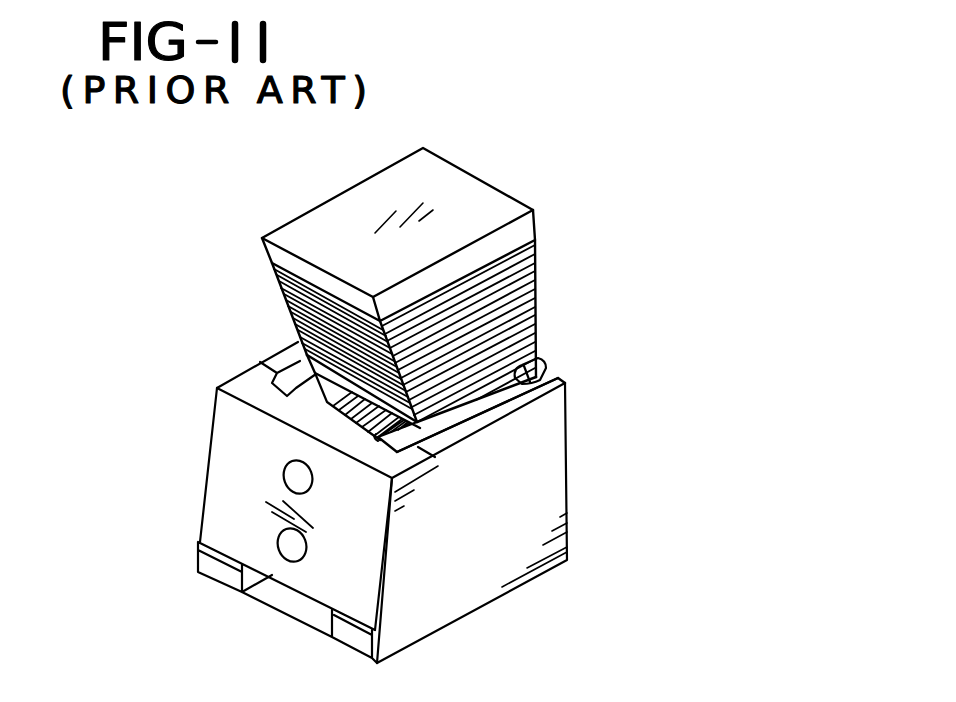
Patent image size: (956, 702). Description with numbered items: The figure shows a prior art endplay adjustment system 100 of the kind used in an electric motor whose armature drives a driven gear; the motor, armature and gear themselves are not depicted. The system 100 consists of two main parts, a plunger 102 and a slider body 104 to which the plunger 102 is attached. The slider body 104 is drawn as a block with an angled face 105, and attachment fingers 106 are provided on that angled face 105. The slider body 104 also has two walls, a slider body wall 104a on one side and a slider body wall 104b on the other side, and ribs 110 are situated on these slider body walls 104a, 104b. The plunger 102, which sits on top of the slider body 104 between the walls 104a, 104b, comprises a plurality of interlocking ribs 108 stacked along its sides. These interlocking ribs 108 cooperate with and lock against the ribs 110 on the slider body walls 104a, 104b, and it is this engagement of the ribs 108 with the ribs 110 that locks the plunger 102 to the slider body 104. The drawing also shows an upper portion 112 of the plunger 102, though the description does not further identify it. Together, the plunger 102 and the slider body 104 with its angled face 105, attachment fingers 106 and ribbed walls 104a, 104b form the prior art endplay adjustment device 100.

The endplay adjustment system 100 is at (213, 271).
The plunger 102 is at (518, 200).
The slider body 104 is at (548, 502).
The slider body wall 104a is at (278, 352).
The slider body wall 104b is at (492, 407).
The angled face 105 is at (230, 476).
The attachment fingers 106 is at (546, 362).
The interlocking ribs 108 is at (520, 289).
The ribs 110 is at (317, 393).
The top plate of heat sink 112 is at (457, 170).